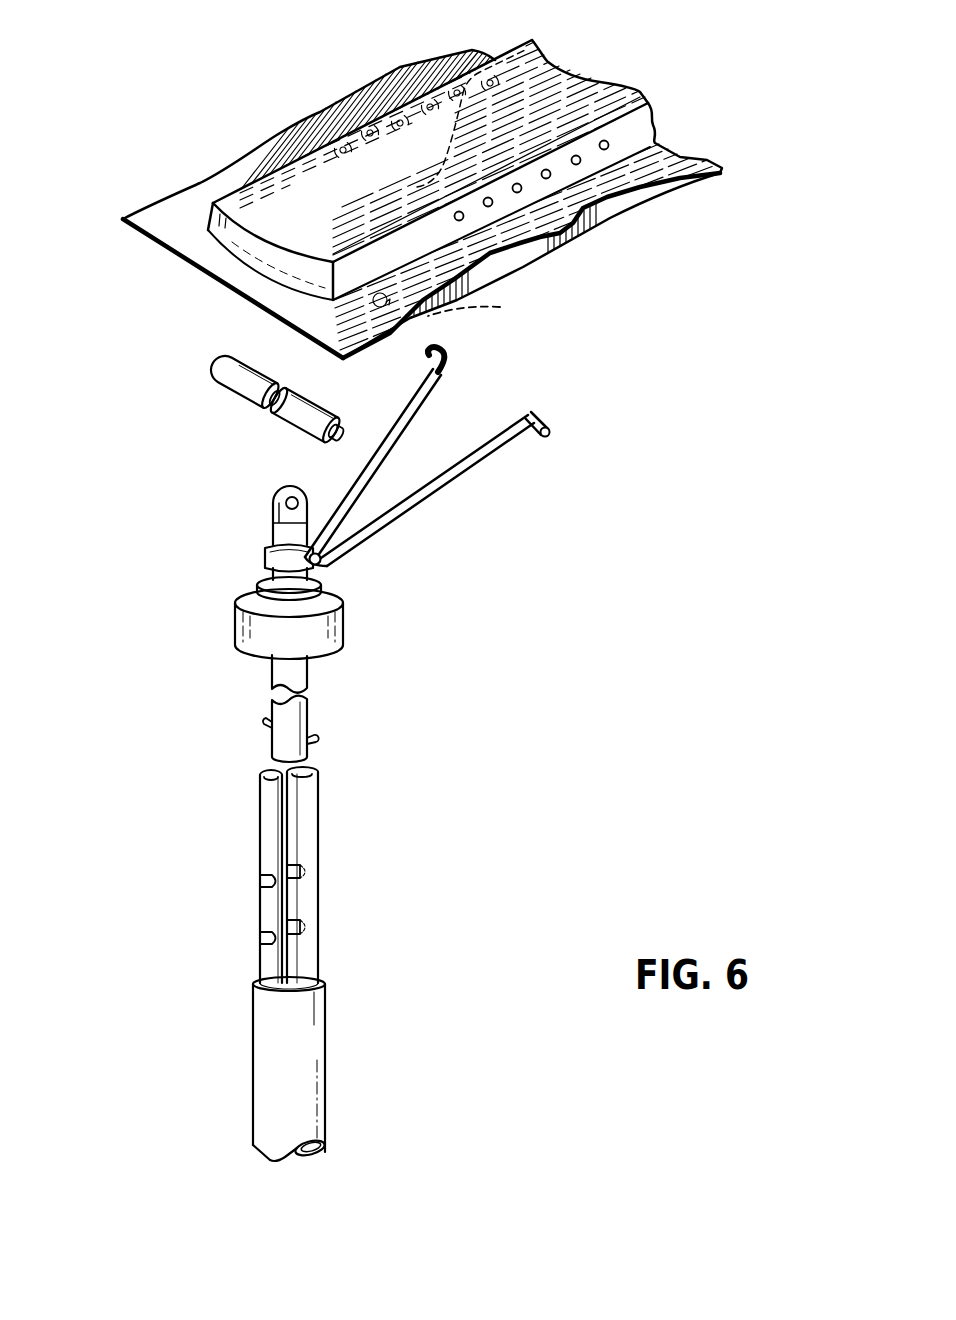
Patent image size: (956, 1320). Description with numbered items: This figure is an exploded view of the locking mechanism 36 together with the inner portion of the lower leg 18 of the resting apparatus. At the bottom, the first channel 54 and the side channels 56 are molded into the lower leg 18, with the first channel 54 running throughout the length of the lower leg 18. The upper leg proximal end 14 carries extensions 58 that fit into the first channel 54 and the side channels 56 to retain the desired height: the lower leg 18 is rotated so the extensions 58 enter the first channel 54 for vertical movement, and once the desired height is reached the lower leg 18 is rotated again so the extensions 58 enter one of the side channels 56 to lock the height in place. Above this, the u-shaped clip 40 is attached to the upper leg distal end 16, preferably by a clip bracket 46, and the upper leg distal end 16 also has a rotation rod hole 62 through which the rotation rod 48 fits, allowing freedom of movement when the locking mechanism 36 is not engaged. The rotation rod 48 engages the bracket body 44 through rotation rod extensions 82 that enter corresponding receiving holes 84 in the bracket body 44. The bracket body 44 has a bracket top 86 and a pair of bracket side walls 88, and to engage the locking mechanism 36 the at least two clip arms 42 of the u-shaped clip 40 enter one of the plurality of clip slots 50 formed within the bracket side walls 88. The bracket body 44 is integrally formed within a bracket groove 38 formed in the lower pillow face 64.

The upper leg proximal end 14 is at (280, 735).
The upper leg distal end 16 is at (338, 641).
The lower leg 18 is at (265, 1052).
The locking mechanism 36 is at (566, 86).
The bracket groove 38 is at (257, 257).
The u-shaped clip 40 is at (458, 472).
The clip arms 42 is at (436, 352).
The bracket body 44 is at (643, 128).
The clip bracket 46 is at (318, 563).
The rotation rod 48 is at (250, 388).
The clip slots 50 is at (606, 146).
The first channel 54 is at (293, 963).
The side channels 56 is at (307, 878).
The extensions 58 is at (313, 738).
The rotation rod hole 62 is at (290, 505).
The lower pillow face 64 is at (318, 113).
The rotation rod extensions 82 is at (212, 362).
The receiving holes 84 is at (500, 308).
The bracket top 86 is at (413, 143).
The bracket side walls 88 is at (433, 232).